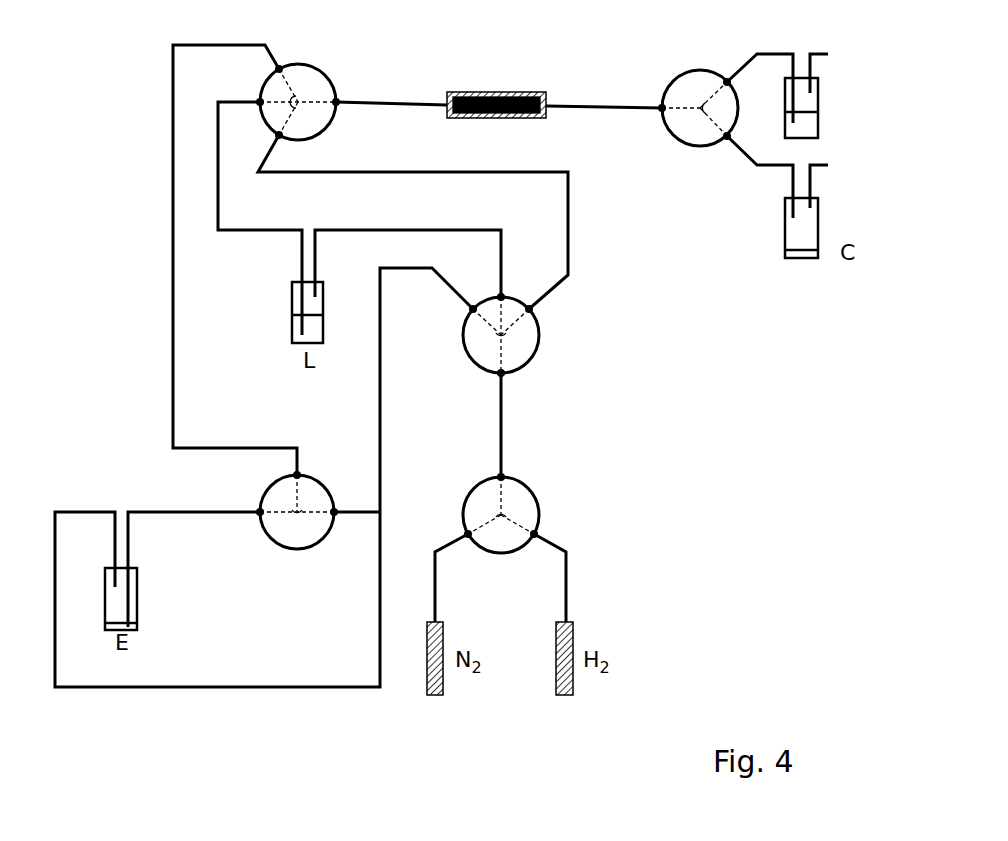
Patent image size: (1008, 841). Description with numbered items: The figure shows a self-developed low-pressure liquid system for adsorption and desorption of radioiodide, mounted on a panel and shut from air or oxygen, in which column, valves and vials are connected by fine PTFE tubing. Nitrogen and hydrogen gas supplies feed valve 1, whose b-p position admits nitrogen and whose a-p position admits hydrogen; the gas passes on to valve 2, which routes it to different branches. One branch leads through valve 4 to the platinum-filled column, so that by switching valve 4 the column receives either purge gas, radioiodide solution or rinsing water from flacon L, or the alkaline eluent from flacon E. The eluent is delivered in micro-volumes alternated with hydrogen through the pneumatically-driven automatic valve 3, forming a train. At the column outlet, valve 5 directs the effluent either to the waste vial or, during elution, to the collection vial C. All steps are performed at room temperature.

The valve 1 is at (549, 503).
The valve 2 is at (549, 333).
The automatic valve 3 is at (280, 515).
The valve 4 is at (320, 100).
The valve 5 is at (666, 102).
The element column is at (496, 119).